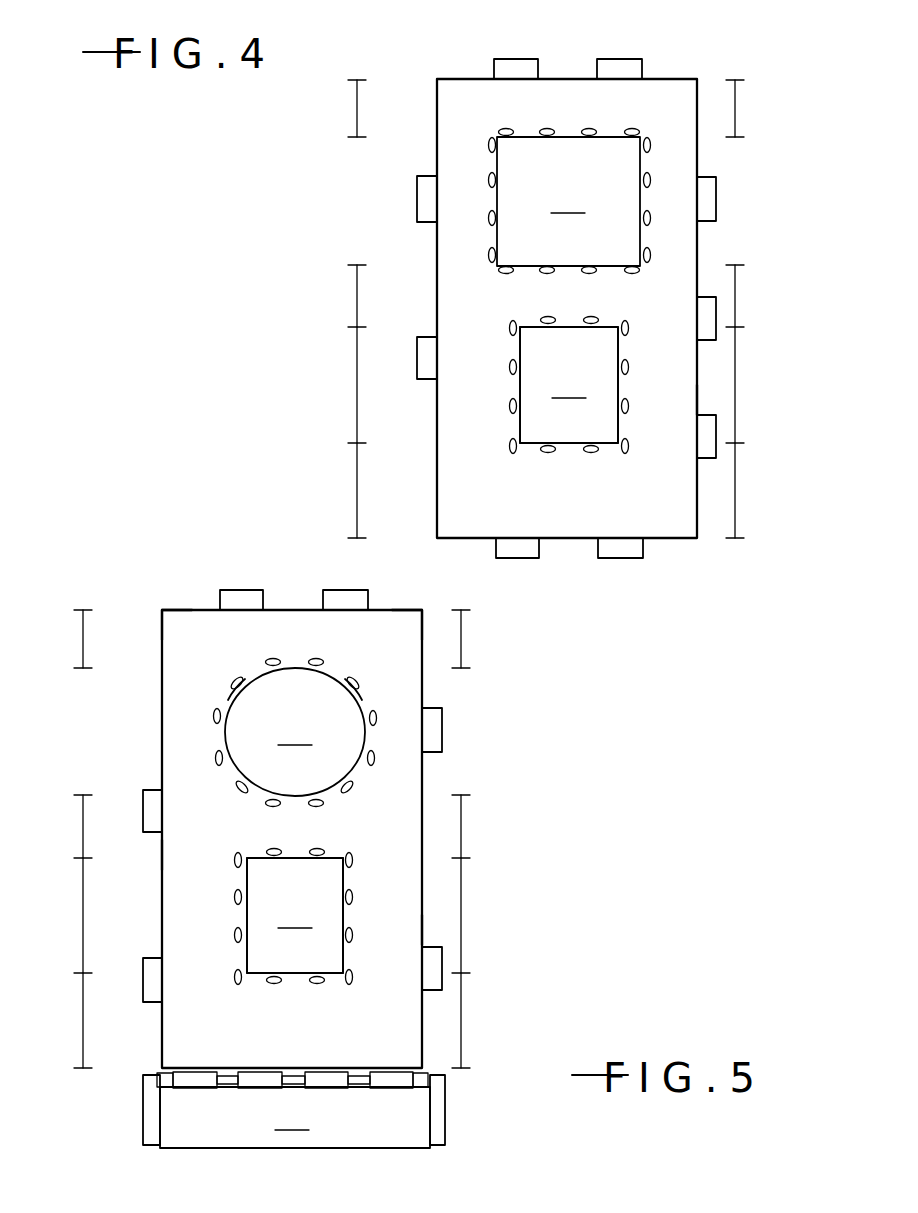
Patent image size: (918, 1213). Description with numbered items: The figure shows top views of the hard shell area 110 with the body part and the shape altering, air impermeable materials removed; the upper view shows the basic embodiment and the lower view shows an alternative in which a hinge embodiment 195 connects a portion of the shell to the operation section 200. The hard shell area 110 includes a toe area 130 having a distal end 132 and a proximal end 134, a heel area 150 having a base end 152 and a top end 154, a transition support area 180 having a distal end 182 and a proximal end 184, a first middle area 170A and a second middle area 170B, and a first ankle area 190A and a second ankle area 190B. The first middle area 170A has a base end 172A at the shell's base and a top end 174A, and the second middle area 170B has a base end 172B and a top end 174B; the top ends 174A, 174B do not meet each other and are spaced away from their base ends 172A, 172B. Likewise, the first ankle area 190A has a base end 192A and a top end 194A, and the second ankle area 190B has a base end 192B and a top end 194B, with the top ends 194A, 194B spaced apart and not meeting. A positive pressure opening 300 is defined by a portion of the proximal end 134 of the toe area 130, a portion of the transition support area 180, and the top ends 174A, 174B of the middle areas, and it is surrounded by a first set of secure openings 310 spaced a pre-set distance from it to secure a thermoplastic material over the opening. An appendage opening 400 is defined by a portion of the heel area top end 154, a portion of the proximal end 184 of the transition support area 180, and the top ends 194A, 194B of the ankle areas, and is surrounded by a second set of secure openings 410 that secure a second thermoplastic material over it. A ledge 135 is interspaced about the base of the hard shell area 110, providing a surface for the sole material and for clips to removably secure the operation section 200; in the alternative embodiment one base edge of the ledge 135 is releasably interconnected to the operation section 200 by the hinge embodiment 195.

In FIG. 4, the hard shell area 110 is at (705, 45).
In FIG. 5, the hard shell area 110 is at (113, 547).
In FIG. 4, the ledge 135 is at (420, 176).
In FIG. 5, the ledge 135 is at (148, 790).
In FIG. 4, the toe area 130 is at (546, 490).
In FIG. 5, the toe area 130 is at (272, 1020).
In FIG. 4, the distal end of toe area 132 is at (565, 538).
In FIG. 5, the distal end of toe area 132 is at (289, 1068).
In FIG. 4, the proximal end of toe area 134 is at (565, 436).
In FIG. 5, the proximal end of toe area 134 is at (289, 974).
In FIG. 4, the heel area 150 is at (546, 108).
In FIG. 5, the heel area 150 is at (272, 639).
In FIG. 4, the base end of heel area 152 is at (561, 135).
In FIG. 5, the base end of heel area 152 is at (289, 667).
In FIG. 4, the top end of heel area 154 is at (561, 78).
In FIG. 5, the top end of heel area 154 is at (289, 608).
In FIG. 4, the first middle area 170A is at (745, 385).
In FIG. 5, the first middle area 170A is at (470, 915).
In FIG. 4, the second middle area 170B is at (367, 385).
In FIG. 5, the second middle area 170B is at (93, 915).
In FIG. 4, the base end of first middle area 172A is at (697, 405).
In FIG. 5, the base end of first middle area 172A is at (423, 935).
In FIG. 4, the base end of second middle area 172B is at (437, 330).
In FIG. 5, the base end of second middle area 172B is at (162, 849).
In FIG. 4, the top end of first middle area 174A is at (618, 350).
In FIG. 5, the top end of first middle area 174A is at (343, 880).
In FIG. 4, the top end of second middle area 174B is at (520, 424).
In FIG. 5, the top end of second middle area 174B is at (247, 955).
In FIG. 4, the transition support area 180 is at (546, 296).
In FIG. 5, the transition support area 180 is at (272, 826).
In FIG. 4, the distal end of transition support area 182 is at (565, 318).
In FIG. 5, the distal end of transition support area 182 is at (289, 855).
In FIG. 4, the proximal end of transition support area 184 is at (561, 265).
In FIG. 5, the proximal end of transition support area 184 is at (289, 795).
In FIG. 4, the first ankle area 190A is at (735, 137).
In FIG. 5, the first ankle area 190A is at (461, 668).
In FIG. 4, the second ankle area 190B is at (357, 137).
In FIG. 5, the second ankle area 190B is at (83, 668).
In FIG. 5, the base end of first ankle area 192A is at (458, 570).
In FIG. 5, the base end of second ankle area 192B is at (160, 627).
In FIG. 5, the top end of first ankle area 194A is at (357, 703).
In FIG. 5, the top end of second ankle area 194B is at (235, 697).
In FIG. 5, the hinge embodiment 195 is at (173, 1076).
In FIG. 5, the operation section 200 is at (294, 1110).
In FIG. 4, the positive pressure opening 300 is at (569, 385).
In FIG. 5, the positive pressure opening 300 is at (295, 915).
In FIG. 4, the first set of secure openings 310 is at (591, 453).
In FIG. 5, the first set of secure openings 310 is at (317, 984).
In FIG. 4, the appendage opening 400 is at (568, 201).
In FIG. 5, the appendage opening 400 is at (295, 732).
In FIG. 4, the second set of secure openings 410 is at (547, 128).
In FIG. 5, the second set of secure openings 410 is at (275, 659).